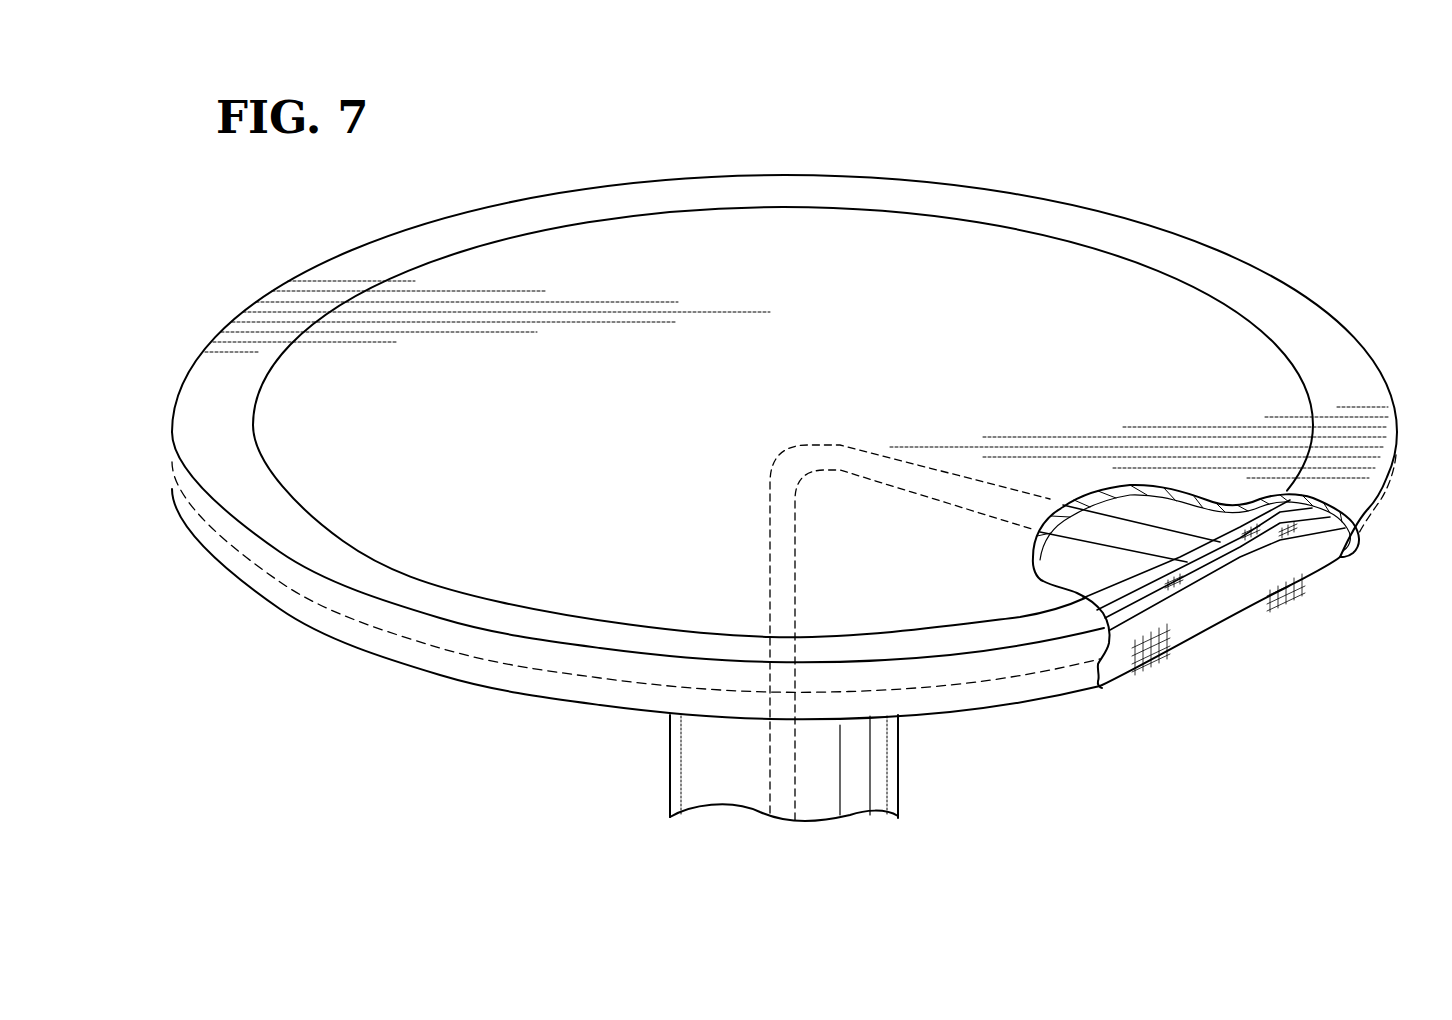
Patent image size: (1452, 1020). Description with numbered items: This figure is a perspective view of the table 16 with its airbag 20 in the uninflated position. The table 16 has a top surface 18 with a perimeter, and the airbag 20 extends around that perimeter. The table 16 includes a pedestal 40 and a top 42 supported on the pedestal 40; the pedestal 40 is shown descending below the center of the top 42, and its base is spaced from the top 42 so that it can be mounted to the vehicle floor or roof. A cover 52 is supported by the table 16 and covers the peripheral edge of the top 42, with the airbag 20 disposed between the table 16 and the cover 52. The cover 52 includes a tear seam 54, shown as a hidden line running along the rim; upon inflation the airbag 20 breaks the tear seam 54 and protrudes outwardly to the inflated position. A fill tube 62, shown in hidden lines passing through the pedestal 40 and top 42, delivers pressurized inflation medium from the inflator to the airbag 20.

The table 16 is at (1257, 158).
The top surface 18 is at (918, 258).
The airbag 20 is at (1318, 563).
The pedestal 40 is at (670, 772).
The top 42 is at (658, 296).
The cover 52 is at (1338, 372).
The tear seam 54 is at (1050, 667).
The fill tube 62 is at (795, 793).